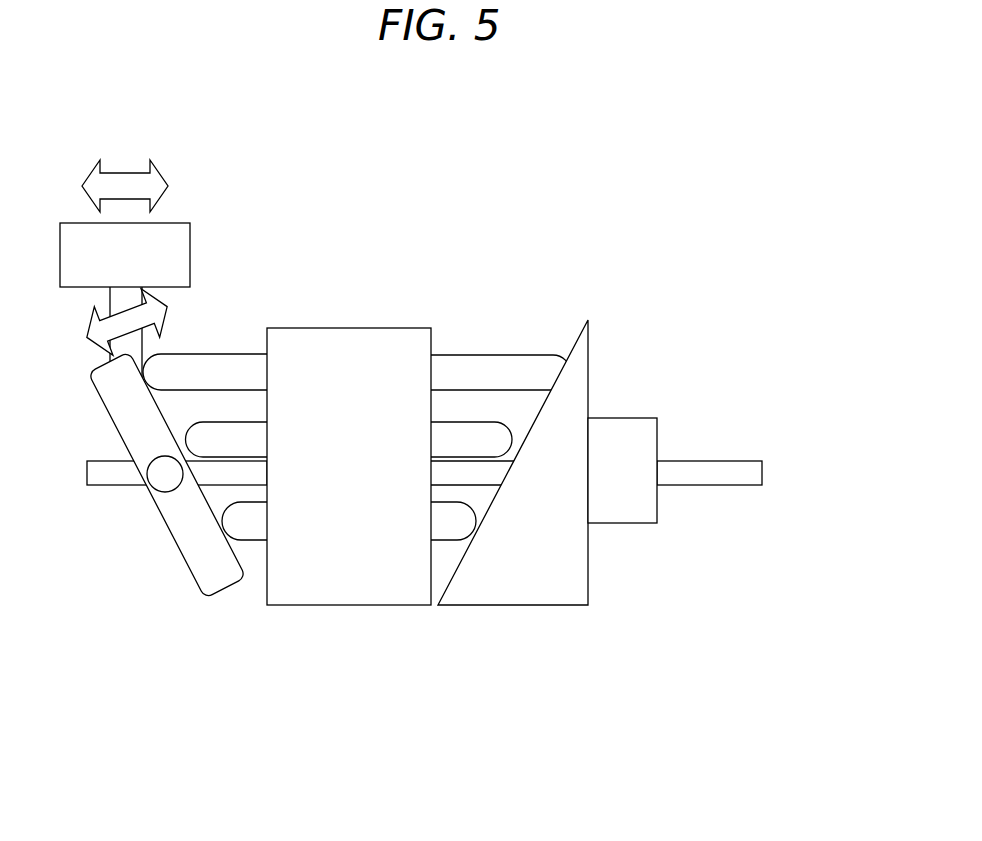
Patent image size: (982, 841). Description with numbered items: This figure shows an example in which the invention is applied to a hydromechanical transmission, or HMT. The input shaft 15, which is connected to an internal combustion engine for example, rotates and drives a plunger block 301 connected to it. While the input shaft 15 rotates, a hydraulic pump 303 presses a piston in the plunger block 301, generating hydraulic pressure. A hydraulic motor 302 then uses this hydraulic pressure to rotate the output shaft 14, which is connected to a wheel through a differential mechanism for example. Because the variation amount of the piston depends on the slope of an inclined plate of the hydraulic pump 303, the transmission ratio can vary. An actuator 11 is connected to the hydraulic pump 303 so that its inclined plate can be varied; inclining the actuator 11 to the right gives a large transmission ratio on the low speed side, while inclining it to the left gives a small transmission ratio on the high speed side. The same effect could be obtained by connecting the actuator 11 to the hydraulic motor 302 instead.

The actuator 11 is at (175, 223).
The output shaft 14 is at (628, 418).
The input shaft 15 is at (683, 485).
The plunger block 301 is at (365, 328).
The hydraulic motor 302 is at (570, 333).
The hydraulic pump 303 is at (180, 582).